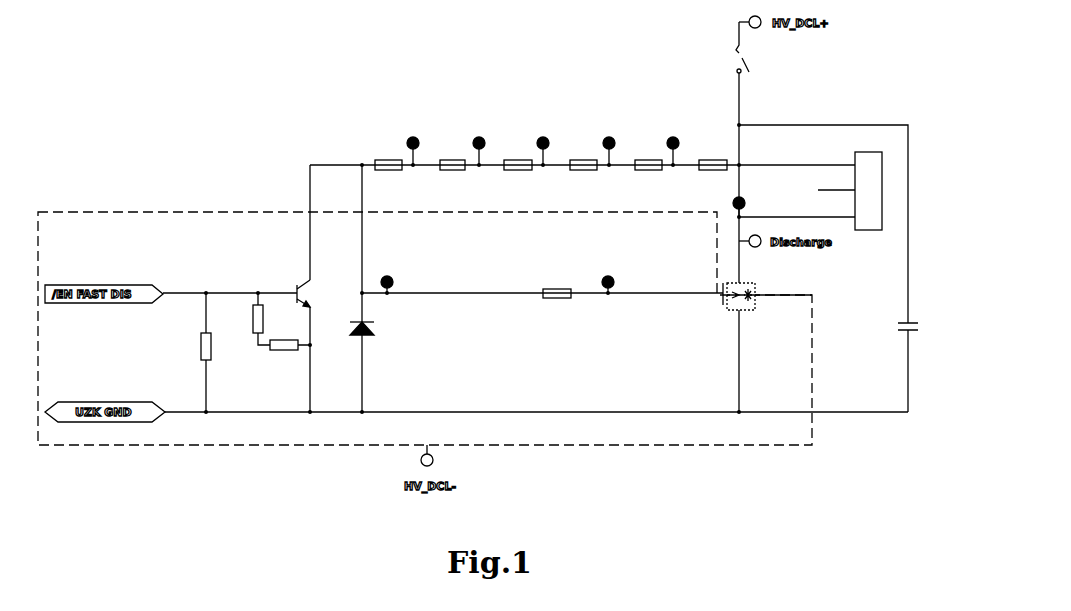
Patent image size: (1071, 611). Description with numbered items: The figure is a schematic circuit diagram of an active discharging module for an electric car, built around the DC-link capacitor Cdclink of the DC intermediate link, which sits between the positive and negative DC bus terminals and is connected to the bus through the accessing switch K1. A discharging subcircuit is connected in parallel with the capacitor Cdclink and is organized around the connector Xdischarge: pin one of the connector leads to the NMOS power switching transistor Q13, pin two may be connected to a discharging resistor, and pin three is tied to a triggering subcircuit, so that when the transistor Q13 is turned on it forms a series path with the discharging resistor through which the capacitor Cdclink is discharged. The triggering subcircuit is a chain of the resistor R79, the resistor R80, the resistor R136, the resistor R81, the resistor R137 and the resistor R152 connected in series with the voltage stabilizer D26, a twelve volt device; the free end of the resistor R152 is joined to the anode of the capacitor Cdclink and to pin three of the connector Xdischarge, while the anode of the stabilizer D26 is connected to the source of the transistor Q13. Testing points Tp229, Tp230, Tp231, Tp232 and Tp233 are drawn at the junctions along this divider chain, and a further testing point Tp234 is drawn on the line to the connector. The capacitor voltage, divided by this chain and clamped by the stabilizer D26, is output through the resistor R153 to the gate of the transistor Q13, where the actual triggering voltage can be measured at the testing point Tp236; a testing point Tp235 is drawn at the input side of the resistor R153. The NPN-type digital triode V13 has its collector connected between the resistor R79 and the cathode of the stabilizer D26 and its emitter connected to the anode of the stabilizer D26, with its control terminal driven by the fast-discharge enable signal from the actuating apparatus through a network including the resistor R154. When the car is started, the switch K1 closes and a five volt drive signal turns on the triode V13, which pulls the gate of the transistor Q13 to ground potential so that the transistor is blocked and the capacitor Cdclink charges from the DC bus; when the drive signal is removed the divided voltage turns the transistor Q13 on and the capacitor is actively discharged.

The accessing switch K1 is at (752, 47).
The resistor R79 is at (387, 157).
The resistor R80 is at (451, 157).
The resistor R136 is at (515, 157).
The resistor R81 is at (582, 157).
The resistor R137 is at (645, 157).
The resistor R152 is at (710, 157).
The resistor R153 is at (557, 286).
The resistor R154 is at (195, 352).
The test point Tp229 is at (417, 143).
The test point Tp230 is at (483, 143).
The test point Tp231 is at (547, 143).
The test point Tp232 is at (613, 143).
The test point Tp233 is at (677, 143).
The test point Tp234 is at (747, 198).
The test point Tp235 is at (392, 276).
The testing point Tp236 is at (613, 276).
The connector Xdischarge is at (862, 183).
The DC-link capacitor Cdclink is at (888, 337).
The NMOS power switching transistor Q13 is at (753, 292).
The NPN-type digital triode V13 is at (291, 283).
The voltage stabilizer D26 is at (377, 329).